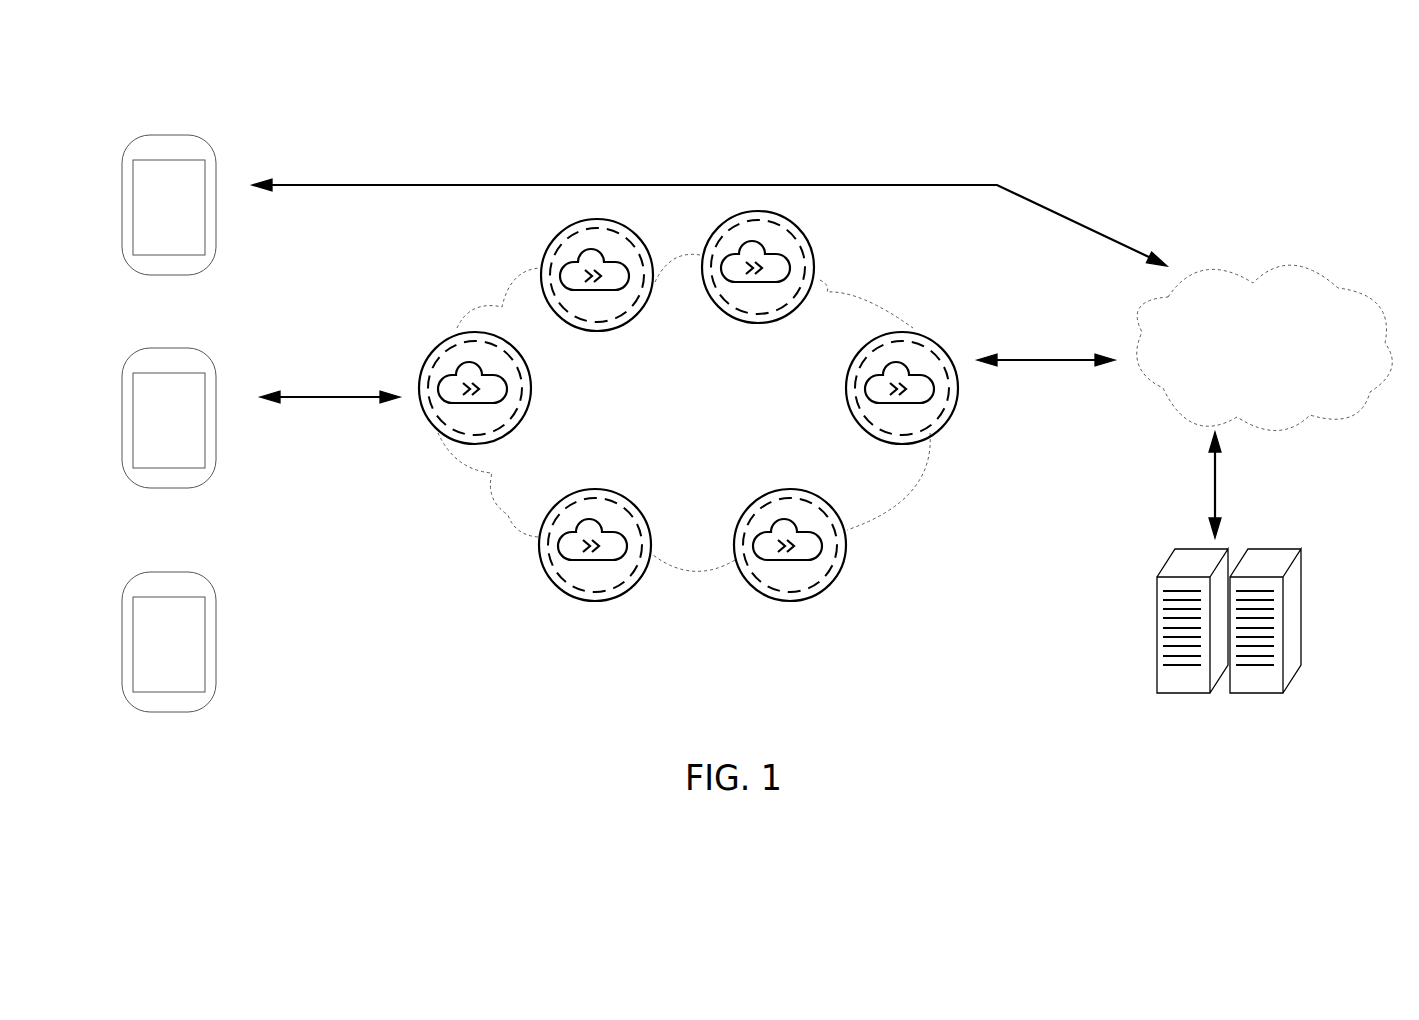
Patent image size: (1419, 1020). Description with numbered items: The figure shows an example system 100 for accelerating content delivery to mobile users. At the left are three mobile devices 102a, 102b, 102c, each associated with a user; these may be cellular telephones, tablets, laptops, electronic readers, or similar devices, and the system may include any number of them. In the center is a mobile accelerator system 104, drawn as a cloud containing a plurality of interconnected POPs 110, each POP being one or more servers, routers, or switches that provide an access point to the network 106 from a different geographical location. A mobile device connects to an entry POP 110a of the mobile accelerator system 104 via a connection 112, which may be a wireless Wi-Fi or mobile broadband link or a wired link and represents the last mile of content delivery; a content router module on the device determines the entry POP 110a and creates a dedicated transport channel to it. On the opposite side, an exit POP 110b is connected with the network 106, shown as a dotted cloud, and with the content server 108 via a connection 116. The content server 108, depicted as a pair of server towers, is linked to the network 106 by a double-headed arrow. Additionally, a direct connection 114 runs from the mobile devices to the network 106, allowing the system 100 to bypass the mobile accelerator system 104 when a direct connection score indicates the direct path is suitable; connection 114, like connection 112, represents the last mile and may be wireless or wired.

The system 100 is at (768, 64).
The mobile device 102a is at (210, 149).
The mobile device 102b is at (215, 452).
The mobile device 102c is at (215, 685).
The mobile accelerator system 104 is at (508, 515).
The network 106 is at (1227, 270).
The content server 108 is at (1292, 550).
The POP 110 is at (765, 597).
The entry POP 110a is at (437, 345).
The exit POP 110b is at (934, 345).
The connection 112 is at (353, 397).
The direct connection 114 is at (613, 185).
The connection 116 is at (1068, 360).